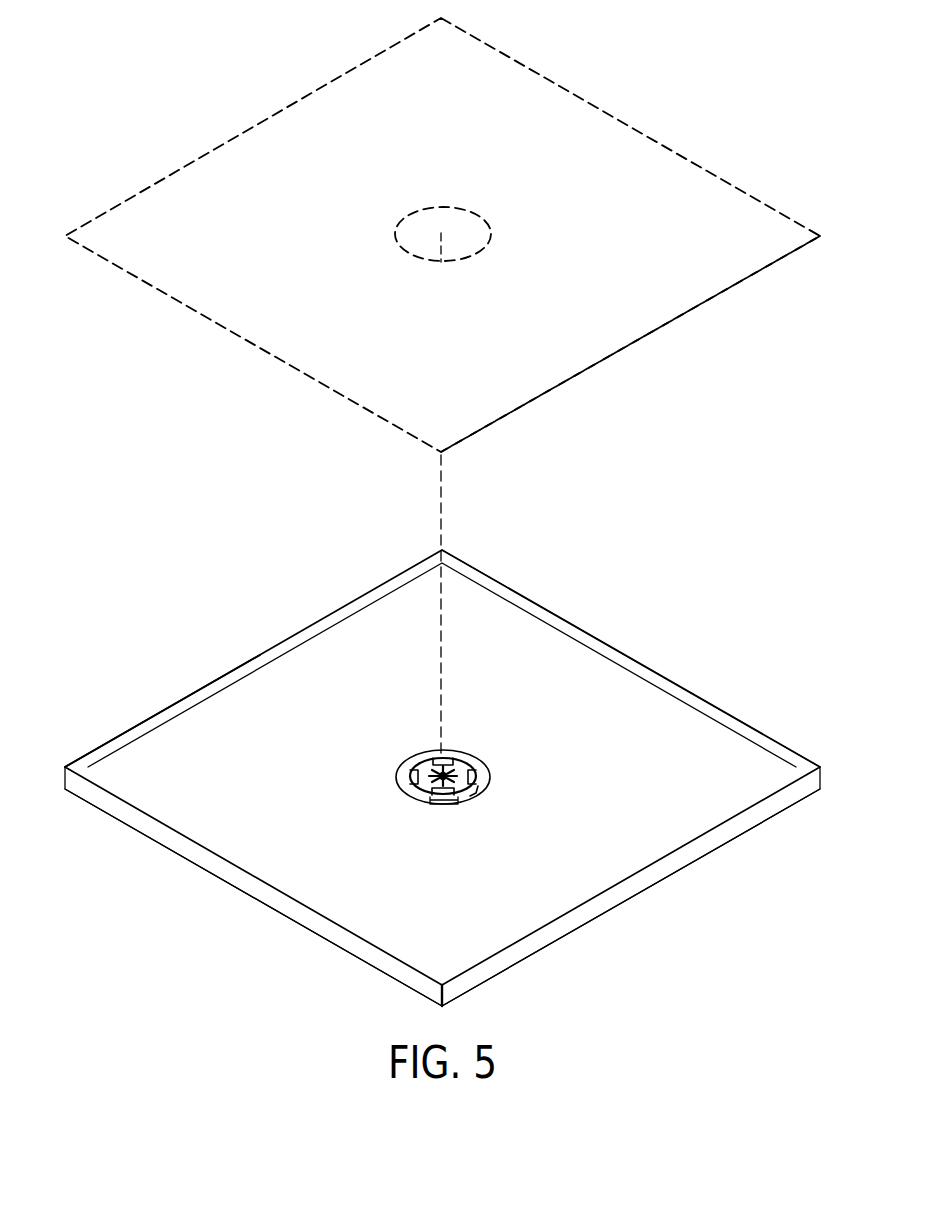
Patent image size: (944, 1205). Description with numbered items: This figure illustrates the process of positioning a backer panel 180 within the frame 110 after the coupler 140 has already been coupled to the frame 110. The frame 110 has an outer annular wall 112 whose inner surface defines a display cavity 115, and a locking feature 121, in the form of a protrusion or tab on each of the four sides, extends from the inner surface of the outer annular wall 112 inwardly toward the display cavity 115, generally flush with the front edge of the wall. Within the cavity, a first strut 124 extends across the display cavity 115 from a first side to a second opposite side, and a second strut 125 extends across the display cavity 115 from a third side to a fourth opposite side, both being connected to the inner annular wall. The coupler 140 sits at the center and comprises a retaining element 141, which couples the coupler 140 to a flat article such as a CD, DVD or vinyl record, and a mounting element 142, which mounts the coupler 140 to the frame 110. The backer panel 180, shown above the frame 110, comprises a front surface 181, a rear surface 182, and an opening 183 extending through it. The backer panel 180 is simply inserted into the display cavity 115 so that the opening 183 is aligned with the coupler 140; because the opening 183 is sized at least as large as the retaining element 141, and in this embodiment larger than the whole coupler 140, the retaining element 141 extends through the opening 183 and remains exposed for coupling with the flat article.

The frame 110 is at (750, 817).
The outer annular wall 112 is at (710, 842).
The display cavity 115 is at (120, 755).
The locking feature 121 is at (398, 572).
The first strut 124 is at (407, 757).
The second strut 125 is at (410, 797).
The coupler 140 is at (400, 770).
The retaining element 141 is at (453, 757).
The mounting element 142 is at (477, 795).
The backer panel 180 is at (687, 228).
The front surface 181 is at (577, 141).
The rear surface 182 is at (635, 342).
The opening 183 is at (463, 232).